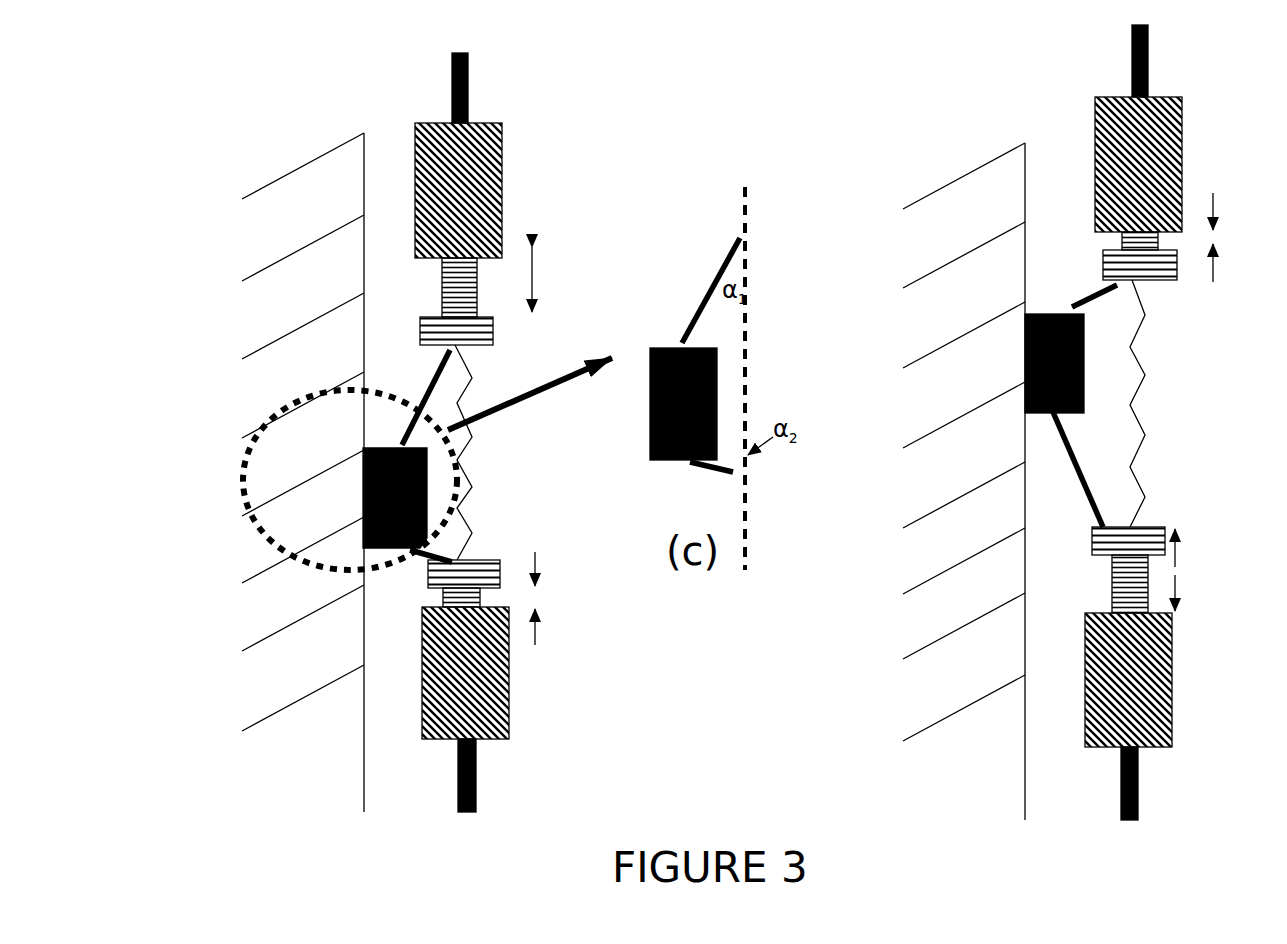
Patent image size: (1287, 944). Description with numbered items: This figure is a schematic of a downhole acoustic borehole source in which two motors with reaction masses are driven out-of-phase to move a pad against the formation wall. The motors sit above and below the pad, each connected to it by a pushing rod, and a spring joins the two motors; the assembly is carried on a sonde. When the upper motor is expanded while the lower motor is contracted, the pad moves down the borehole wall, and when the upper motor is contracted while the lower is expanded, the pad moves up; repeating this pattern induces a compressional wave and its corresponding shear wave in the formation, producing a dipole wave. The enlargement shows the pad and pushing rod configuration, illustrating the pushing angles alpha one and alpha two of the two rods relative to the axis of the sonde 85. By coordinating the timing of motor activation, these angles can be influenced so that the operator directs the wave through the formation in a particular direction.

The axis of the sonde 85 is at (768, 369).